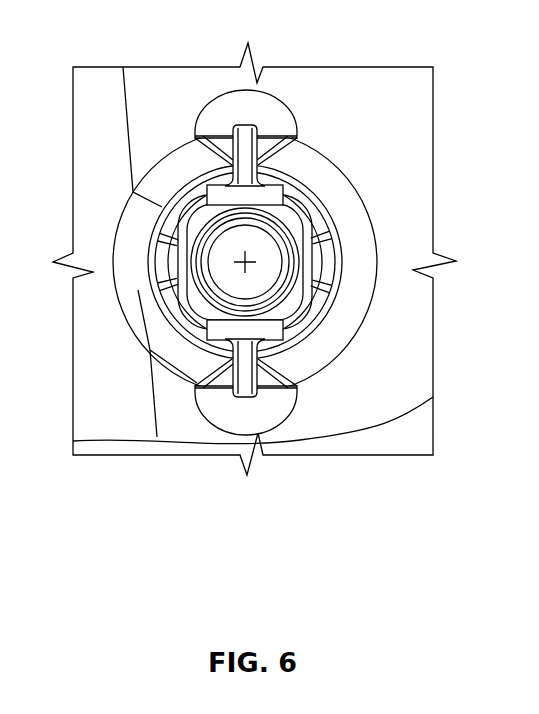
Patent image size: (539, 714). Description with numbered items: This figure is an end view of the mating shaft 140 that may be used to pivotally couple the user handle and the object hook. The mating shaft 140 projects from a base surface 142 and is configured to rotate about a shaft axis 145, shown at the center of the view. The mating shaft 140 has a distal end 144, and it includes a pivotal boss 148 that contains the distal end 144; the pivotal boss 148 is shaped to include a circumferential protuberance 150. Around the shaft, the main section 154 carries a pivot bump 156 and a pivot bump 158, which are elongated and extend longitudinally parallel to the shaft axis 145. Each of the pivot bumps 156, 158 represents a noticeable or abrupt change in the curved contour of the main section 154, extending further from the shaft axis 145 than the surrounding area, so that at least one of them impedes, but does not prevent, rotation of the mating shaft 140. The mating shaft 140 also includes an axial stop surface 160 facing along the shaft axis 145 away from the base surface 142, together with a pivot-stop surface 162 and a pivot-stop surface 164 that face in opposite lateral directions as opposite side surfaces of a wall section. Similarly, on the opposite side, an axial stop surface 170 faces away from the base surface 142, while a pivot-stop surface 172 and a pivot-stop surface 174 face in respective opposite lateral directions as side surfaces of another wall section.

The mating shaft 140 is at (343, 47).
The base surface 142 is at (160, 97).
The distal end 144 is at (262, 283).
The shaft axis 145 is at (250, 257).
The pivotal boss 148 is at (157, 437).
The circumferential protuberance 150 is at (222, 283).
The main section 154 is at (7, 145).
The pivot bump 156 is at (162, 270).
The pivot bump 158 is at (323, 265).
The axial stop surface 160 is at (262, 185).
The pivot-stop surface 162 is at (226, 162).
The pivot-stop surface 164 is at (266, 148).
The axial stop surface 170 is at (251, 381).
The pivot-stop surface 172 is at (230, 382).
The pivot-stop surface 174 is at (263, 363).